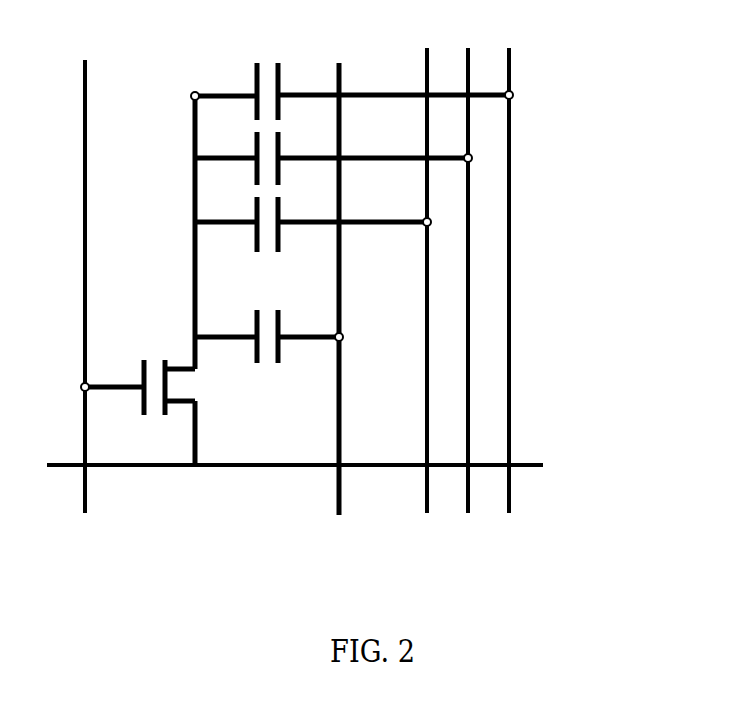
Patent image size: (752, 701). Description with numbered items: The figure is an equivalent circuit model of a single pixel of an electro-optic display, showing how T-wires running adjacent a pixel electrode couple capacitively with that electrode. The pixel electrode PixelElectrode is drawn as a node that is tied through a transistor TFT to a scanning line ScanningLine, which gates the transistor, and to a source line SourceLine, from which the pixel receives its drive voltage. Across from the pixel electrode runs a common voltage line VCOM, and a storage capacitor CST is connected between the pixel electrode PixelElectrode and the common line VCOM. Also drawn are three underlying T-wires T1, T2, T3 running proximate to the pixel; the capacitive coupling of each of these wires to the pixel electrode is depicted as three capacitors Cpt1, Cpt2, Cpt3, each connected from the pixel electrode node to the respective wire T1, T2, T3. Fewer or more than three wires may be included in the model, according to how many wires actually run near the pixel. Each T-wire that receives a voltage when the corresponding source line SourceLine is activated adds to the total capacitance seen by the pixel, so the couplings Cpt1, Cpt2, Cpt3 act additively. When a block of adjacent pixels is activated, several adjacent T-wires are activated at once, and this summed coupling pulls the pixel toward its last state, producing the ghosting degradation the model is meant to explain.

The capacitive coupling of third T-wire Cpt3 is at (385, 86).
The capacitive coupling of second T-wire Cpt2 is at (333, 153).
The capacitive coupling of first T-wire Cpt1 is at (313, 220).
The storage capacitor CST is at (269, 324).
The common voltage line VCOM is at (335, 312).
The T-wire T1 is at (426, 302).
The T-wire T2 is at (467, 302).
The T-wire T3 is at (507, 302).
The scanning line ScanningLine is at (120, 309).
The source line SourceLine is at (378, 465).
The pixel electrode PixelElectrode is at (191, 190).
The thin film transistor TFT is at (138, 412).